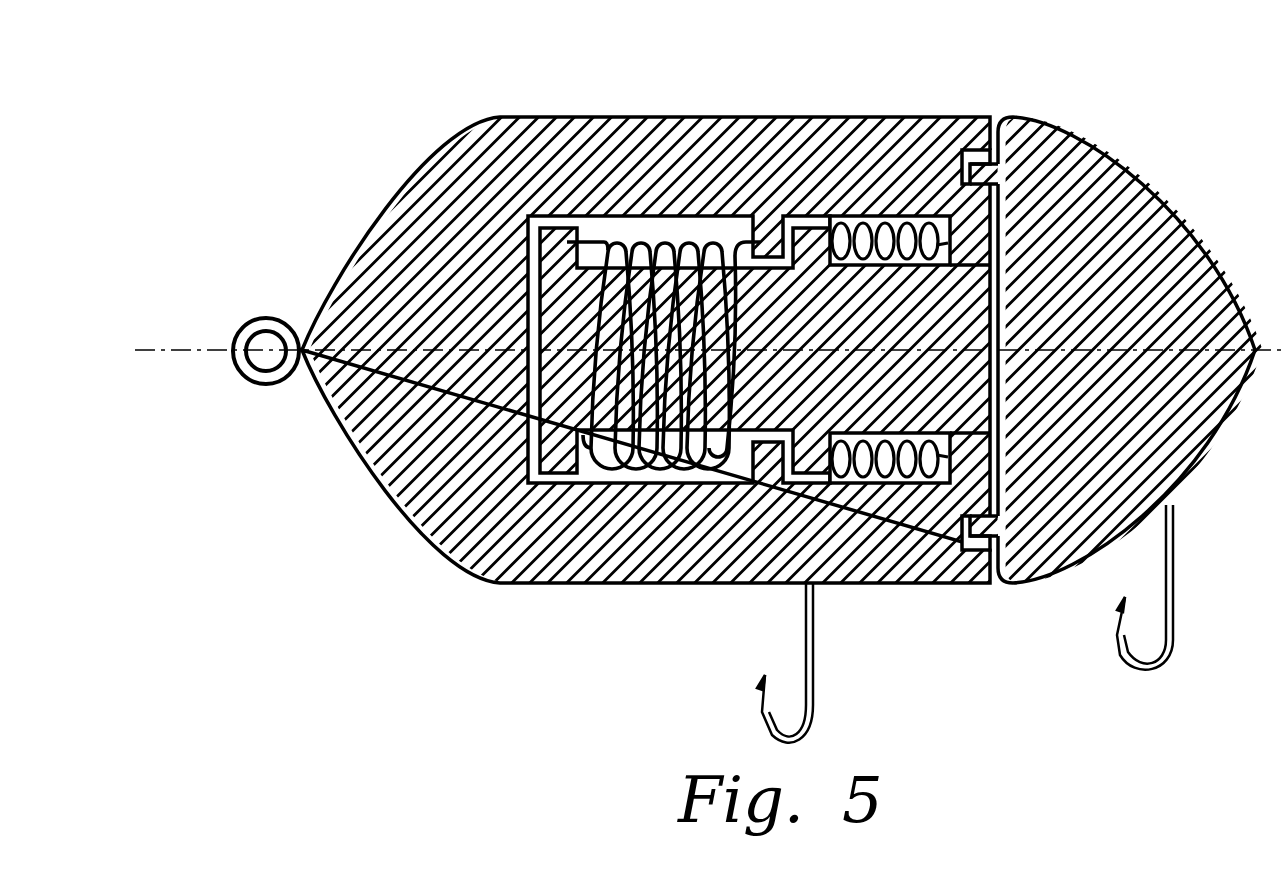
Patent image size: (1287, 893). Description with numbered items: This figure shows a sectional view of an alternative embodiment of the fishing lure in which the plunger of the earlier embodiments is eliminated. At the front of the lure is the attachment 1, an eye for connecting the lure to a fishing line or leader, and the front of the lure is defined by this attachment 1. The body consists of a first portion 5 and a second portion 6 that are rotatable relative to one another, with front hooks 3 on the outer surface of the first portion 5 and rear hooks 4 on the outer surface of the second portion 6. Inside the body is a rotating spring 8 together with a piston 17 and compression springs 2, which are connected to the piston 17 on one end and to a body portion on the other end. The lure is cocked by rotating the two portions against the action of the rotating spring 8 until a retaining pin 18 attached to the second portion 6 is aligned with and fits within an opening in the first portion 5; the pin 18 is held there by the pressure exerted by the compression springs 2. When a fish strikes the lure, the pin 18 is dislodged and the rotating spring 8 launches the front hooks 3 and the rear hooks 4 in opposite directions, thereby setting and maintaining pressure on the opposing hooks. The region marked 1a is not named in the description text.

The attachment 1 is at (258, 316).
The housing end portion 1a is at (960, 157).
The compression springs 2 is at (915, 462).
The front hooks 3 is at (817, 667).
The rear hooks 4 is at (1175, 615).
The first portion 5 is at (608, 162).
The second portion 6 is at (1123, 214).
The rotating spring 8 is at (643, 458).
The piston 17 is at (1128, 398).
The retaining pin 18 is at (987, 167).